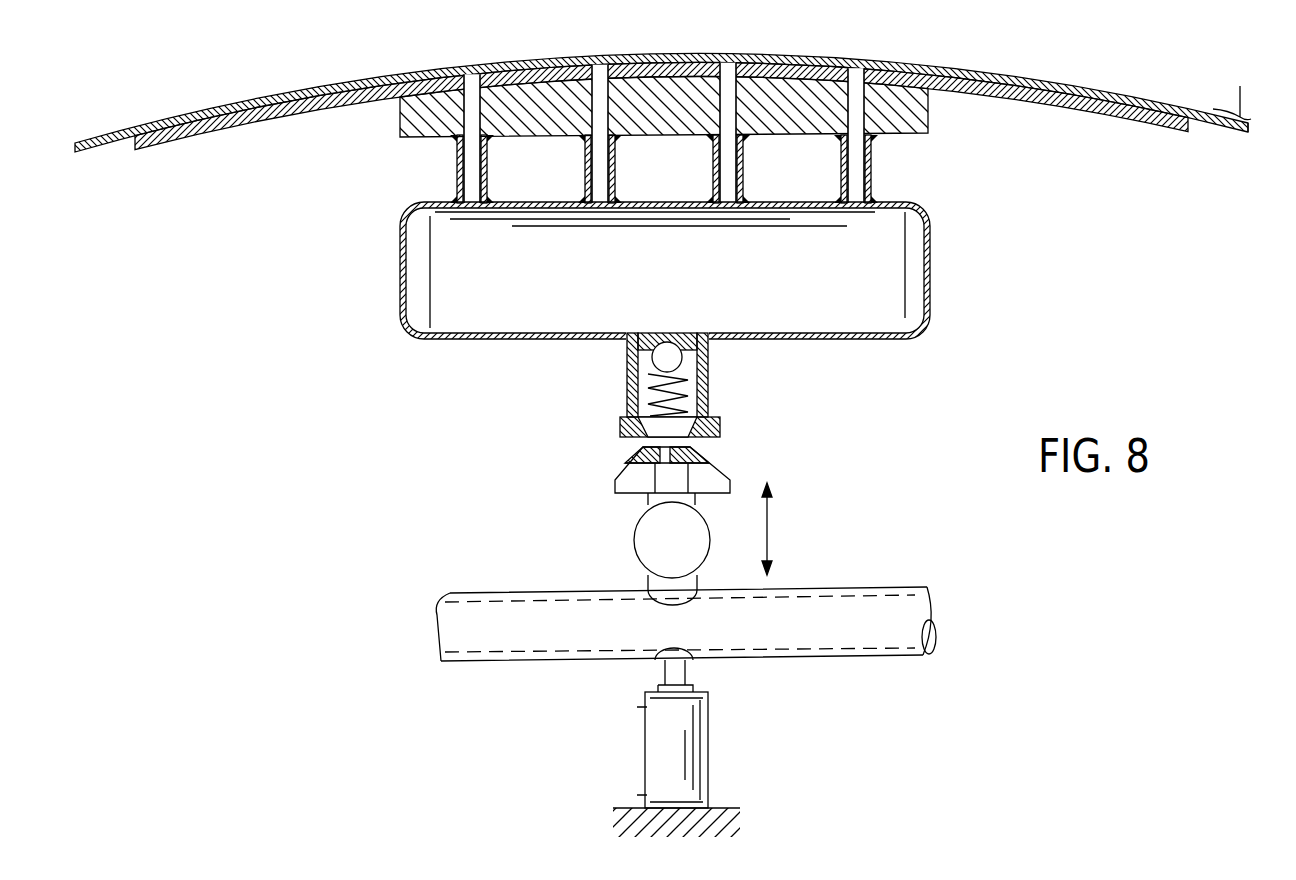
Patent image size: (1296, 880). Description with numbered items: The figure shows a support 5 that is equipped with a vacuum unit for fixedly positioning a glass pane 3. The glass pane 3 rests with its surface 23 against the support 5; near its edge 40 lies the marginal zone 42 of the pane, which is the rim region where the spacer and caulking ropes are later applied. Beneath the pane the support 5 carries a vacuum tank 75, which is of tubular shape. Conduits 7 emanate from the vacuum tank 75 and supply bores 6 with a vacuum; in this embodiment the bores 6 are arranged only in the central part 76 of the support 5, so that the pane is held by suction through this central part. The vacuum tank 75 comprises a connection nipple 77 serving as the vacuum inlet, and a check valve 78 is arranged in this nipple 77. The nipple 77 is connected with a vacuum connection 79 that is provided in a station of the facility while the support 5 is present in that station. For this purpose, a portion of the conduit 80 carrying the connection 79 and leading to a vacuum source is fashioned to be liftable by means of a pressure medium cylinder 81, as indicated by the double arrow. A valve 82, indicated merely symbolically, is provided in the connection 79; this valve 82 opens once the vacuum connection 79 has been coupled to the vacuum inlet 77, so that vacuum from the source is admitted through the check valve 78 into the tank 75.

The glass pane 3 is at (1030, 78).
The surface of the glass pane 23 is at (1100, 90).
The marginal zone 42 is at (1242, 89).
The edge of the glass pane 40 is at (1248, 134).
The support 5 is at (1048, 112).
The central part of the support 76 is at (908, 118).
The bores 6 is at (470, 107).
The conduits 7 is at (472, 176).
The vacuum tank 75 is at (907, 278).
The check valve 78 is at (662, 360).
The connection nipple 77 is at (710, 385).
The vacuum connection 79 is at (722, 472).
The valve 82 is at (648, 547).
The conduit 80 is at (822, 633).
The pressure medium cylinder 81 is at (660, 762).